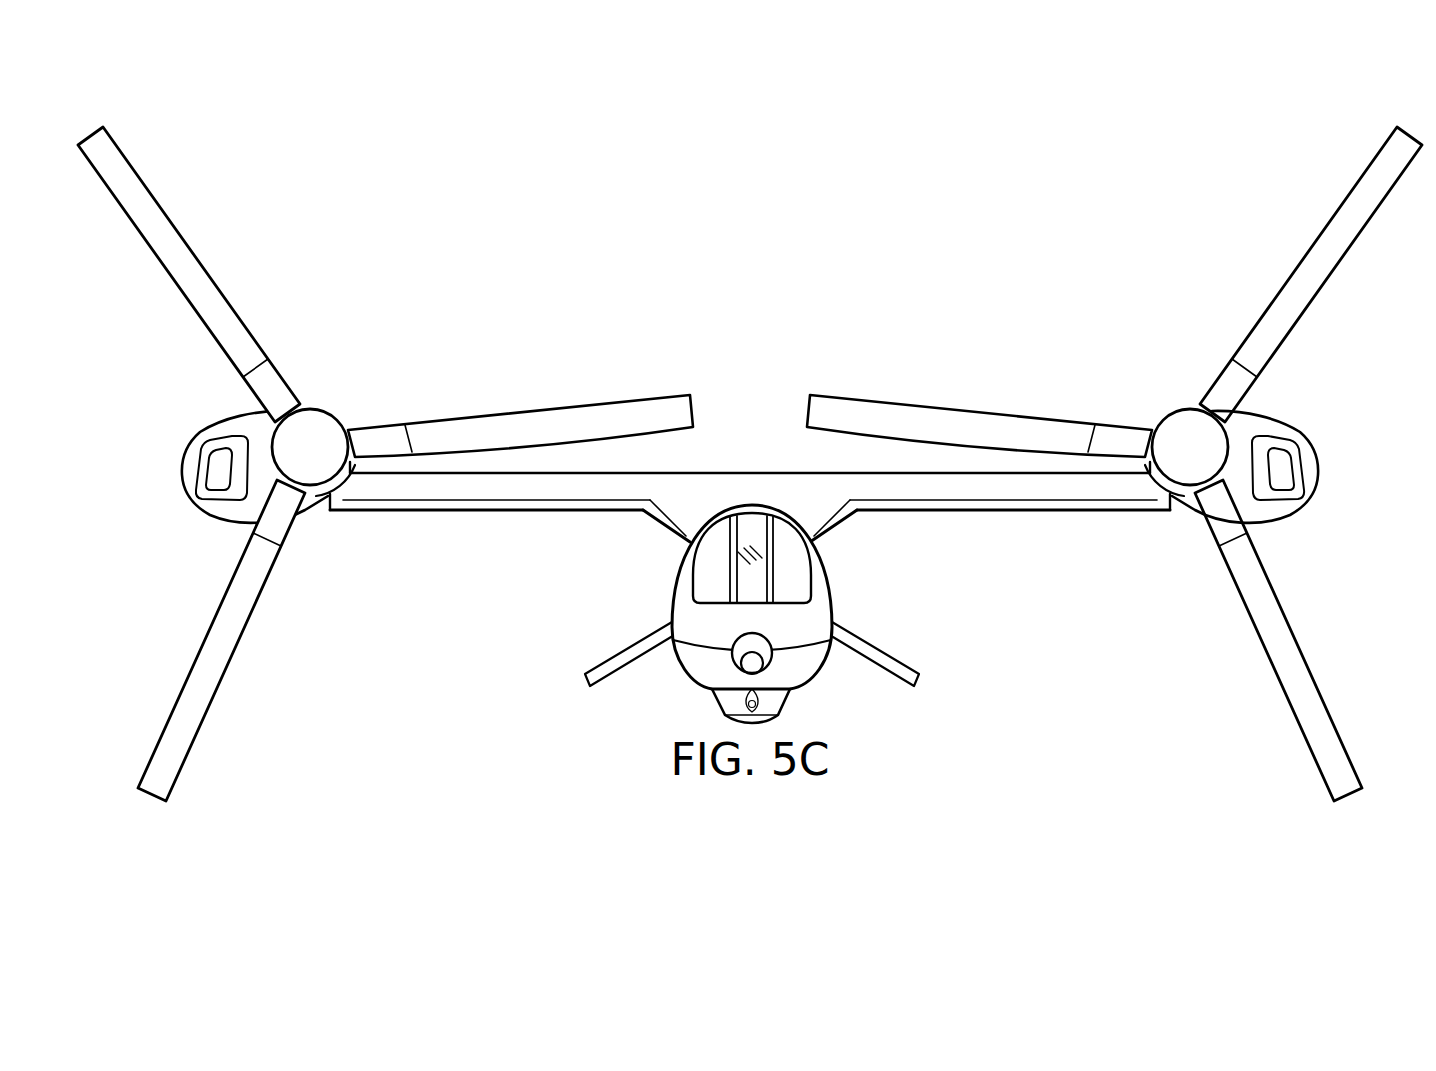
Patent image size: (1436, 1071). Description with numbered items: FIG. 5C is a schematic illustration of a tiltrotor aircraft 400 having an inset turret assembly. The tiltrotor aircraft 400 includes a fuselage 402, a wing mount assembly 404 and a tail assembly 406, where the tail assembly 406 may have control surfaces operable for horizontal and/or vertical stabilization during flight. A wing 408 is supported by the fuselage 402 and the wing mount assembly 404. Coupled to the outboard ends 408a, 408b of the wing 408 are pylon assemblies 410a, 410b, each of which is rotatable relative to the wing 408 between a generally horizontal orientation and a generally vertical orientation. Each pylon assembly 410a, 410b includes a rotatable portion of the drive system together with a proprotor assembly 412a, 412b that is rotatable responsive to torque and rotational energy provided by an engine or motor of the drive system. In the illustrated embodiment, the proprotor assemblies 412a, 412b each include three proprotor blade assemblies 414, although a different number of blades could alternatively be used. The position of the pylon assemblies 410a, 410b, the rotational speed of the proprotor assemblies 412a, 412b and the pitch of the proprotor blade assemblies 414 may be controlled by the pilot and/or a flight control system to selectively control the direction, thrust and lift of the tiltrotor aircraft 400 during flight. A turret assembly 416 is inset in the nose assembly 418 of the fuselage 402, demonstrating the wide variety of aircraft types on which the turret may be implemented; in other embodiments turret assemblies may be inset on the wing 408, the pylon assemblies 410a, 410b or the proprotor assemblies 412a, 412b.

The tiltrotor aircraft 400 is at (718, 376).
The fuselage 402 is at (827, 576).
The wing mount assembly 404 is at (693, 495).
The tail assembly 406 is at (583, 683).
The wing 408 is at (527, 489).
The outboard end of wing 408a is at (1168, 503).
The outboard end of wing 408b is at (332, 502).
The pylon assembly 410a is at (1297, 431).
The pylon assembly 410b is at (202, 433).
The proprotor assembly 412a is at (1177, 419).
The proprotor assembly 412b is at (325, 419).
The proprotor blade assemblies 414 is at (1367, 171).
The turret assembly 416 is at (732, 662).
The nose assembly 418 is at (823, 684).